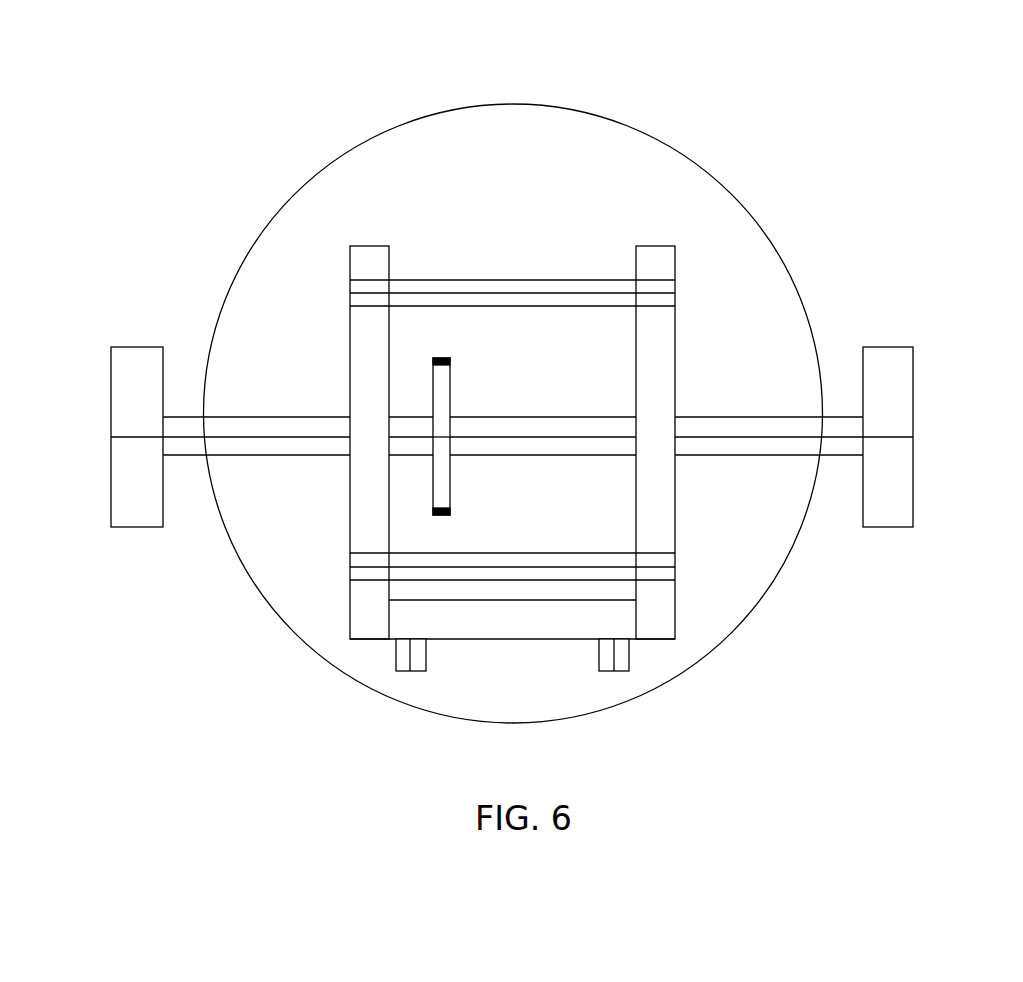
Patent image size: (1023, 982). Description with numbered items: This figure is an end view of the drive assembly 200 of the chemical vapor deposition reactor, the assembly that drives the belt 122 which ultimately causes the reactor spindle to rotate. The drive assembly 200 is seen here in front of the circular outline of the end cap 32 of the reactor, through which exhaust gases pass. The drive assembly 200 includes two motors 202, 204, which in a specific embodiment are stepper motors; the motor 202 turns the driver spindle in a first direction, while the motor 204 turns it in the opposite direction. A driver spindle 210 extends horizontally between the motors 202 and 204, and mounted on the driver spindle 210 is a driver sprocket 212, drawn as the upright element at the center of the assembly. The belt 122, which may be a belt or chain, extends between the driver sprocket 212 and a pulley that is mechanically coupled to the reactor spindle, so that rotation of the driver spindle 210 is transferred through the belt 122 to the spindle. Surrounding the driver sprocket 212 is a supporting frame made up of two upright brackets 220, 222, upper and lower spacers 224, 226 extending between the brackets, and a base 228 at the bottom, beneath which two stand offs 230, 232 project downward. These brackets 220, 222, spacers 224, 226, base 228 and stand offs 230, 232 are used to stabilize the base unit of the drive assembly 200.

The drive assembly 200 is at (760, 65).
The end cap 32 is at (623, 125).
The motor 202 is at (137, 347).
The motor 204 is at (913, 383).
The driver spindle 210 is at (843, 457).
The driver sprocket 212 is at (450, 488).
The belt 122 is at (440, 516).
The bracket 220 is at (350, 337).
The bracket 222 is at (675, 263).
The spacer 224 is at (470, 277).
The spacer 226 is at (358, 561).
The base 228 is at (640, 628).
The stand off 230 is at (396, 657).
The stand off 232 is at (629, 659).